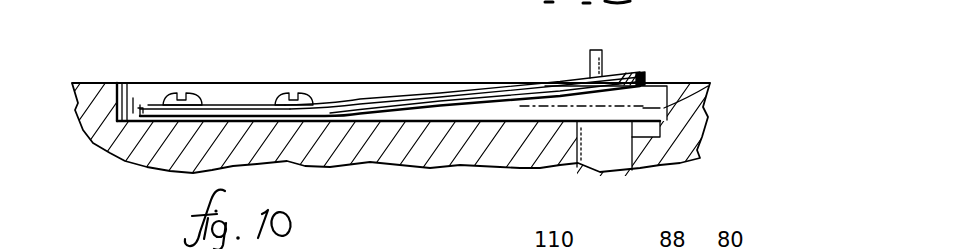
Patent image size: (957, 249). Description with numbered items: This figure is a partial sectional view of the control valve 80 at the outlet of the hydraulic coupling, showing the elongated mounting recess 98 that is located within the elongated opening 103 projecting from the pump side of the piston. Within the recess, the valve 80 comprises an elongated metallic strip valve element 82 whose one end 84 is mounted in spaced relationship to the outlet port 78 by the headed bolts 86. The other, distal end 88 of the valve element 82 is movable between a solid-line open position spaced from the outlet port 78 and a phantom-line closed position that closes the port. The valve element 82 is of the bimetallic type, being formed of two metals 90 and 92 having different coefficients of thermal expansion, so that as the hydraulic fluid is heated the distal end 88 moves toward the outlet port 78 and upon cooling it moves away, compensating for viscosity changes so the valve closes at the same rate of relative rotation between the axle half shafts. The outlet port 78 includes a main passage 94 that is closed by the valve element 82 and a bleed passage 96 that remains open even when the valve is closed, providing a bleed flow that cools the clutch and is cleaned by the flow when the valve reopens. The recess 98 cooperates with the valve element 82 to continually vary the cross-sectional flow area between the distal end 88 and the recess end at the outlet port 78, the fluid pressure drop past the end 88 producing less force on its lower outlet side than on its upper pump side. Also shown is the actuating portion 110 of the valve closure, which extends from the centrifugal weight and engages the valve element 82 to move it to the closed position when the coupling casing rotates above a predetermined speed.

The outlet port 78 is at (617, 145).
The valve 80 is at (721, 58).
The strip valve element 82 is at (397, 96).
The one end of valve element 84 is at (236, 106).
The headed bolts 86 is at (170, 92).
The distal end of valve element 88 is at (634, 72).
The metal 90 is at (485, 88).
The metal 92 is at (550, 102).
The main passage 94 is at (608, 137).
The bleed passage 96 is at (668, 87).
The mounting recess 98 is at (350, 91).
The elongated opening 103 is at (97, 83).
The actuating portion 110 is at (589, 62).